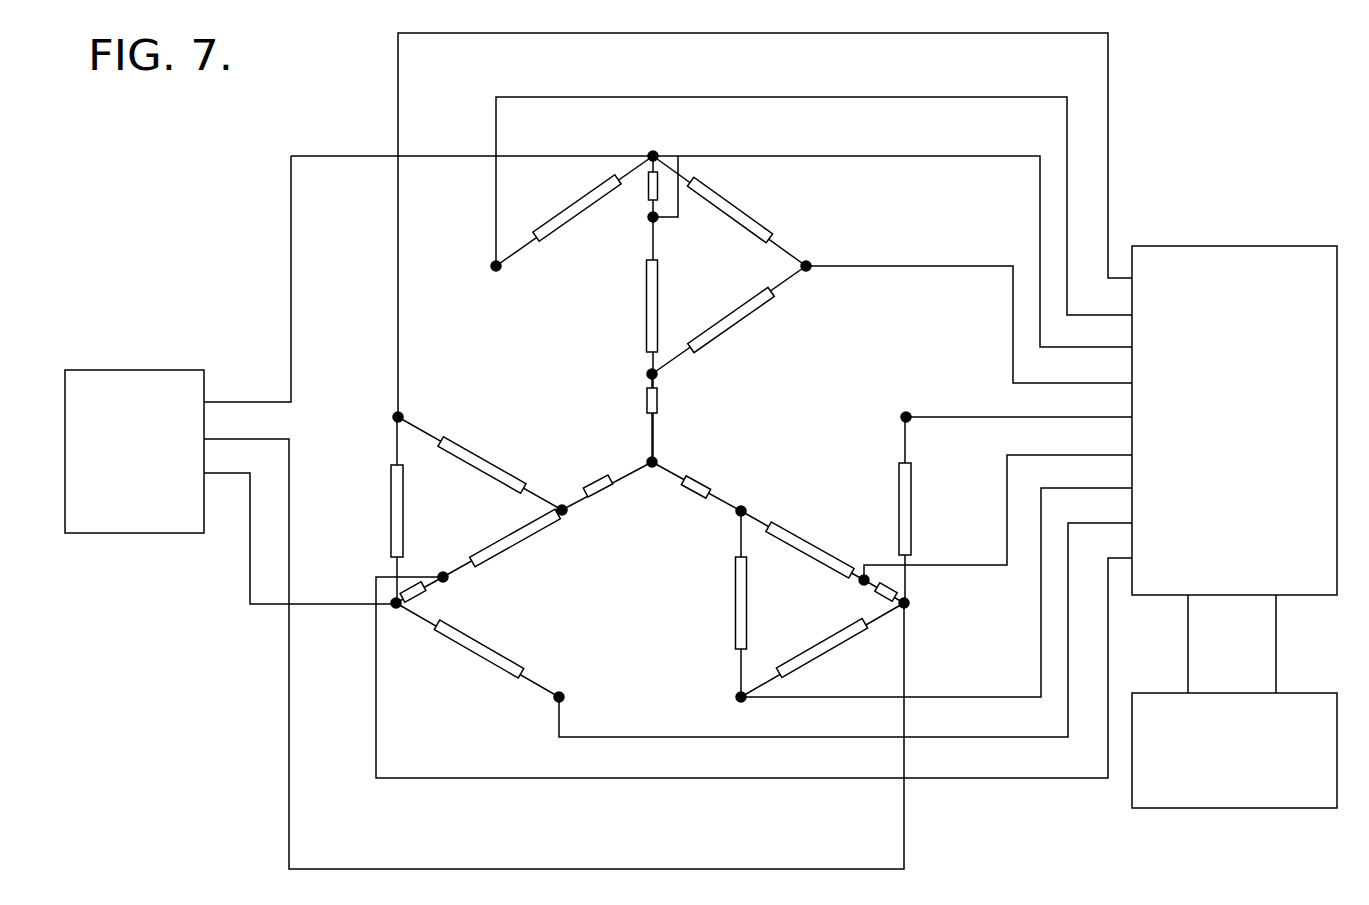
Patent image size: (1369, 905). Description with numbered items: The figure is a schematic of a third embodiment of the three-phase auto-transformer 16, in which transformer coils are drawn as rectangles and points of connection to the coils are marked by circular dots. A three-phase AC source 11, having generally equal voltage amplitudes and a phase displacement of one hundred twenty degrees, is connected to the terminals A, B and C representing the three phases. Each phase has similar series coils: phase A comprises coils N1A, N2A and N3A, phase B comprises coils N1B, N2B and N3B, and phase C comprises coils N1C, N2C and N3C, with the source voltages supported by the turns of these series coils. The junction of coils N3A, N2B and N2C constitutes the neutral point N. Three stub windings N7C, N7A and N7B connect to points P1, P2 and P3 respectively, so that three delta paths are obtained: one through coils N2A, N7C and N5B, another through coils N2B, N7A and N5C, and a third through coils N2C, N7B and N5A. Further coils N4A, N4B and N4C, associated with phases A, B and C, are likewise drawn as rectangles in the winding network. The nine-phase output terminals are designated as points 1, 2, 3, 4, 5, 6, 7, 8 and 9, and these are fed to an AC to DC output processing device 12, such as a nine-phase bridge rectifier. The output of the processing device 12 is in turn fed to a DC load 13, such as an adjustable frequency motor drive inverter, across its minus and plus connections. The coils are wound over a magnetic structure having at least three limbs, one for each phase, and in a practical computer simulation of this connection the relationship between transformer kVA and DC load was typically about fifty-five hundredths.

The AC source 11 is at (125, 370).
The AC to DC output processing device 12 is at (1217, 247).
The DC load 13 is at (1325, 693).
The auto-transformer 16 is at (808, 409).
The terminal A is at (655, 152).
The terminal B is at (910, 603).
The terminal C is at (395, 607).
The neutral point N is at (654, 468).
The point P1 is at (658, 376).
The point P2 is at (735, 514).
The point P3 is at (560, 505).
The output terminal 1 is at (656, 221).
The output terminal 2 is at (809, 264).
The output terminal 3 is at (908, 414).
The output terminal 4 is at (860, 585).
The output terminal 5 is at (737, 698).
The output terminal 6 is at (563, 696).
The output terminal 7 is at (447, 581).
The output terminal 8 is at (394, 417).
The output terminal 9 is at (493, 266).
The coil N1A is at (659, 183).
The coil N1B is at (880, 594).
The coil N1C is at (404, 592).
The coil N2A is at (646, 290).
The coil N2B is at (843, 538).
The coil N2C is at (530, 522).
The coil N3A is at (646, 400).
The coil N3B is at (717, 476).
The coil N3C is at (630, 500).
The coil N4A is at (912, 531).
The coil N4B is at (462, 653).
The coil N4C is at (562, 214).
The coil N5A is at (391, 482).
The coil N5B is at (763, 203).
The coil N5C is at (843, 647).
The stub winding N7A is at (735, 582).
The stub winding N7B is at (500, 447).
The stub winding N7C is at (725, 310).